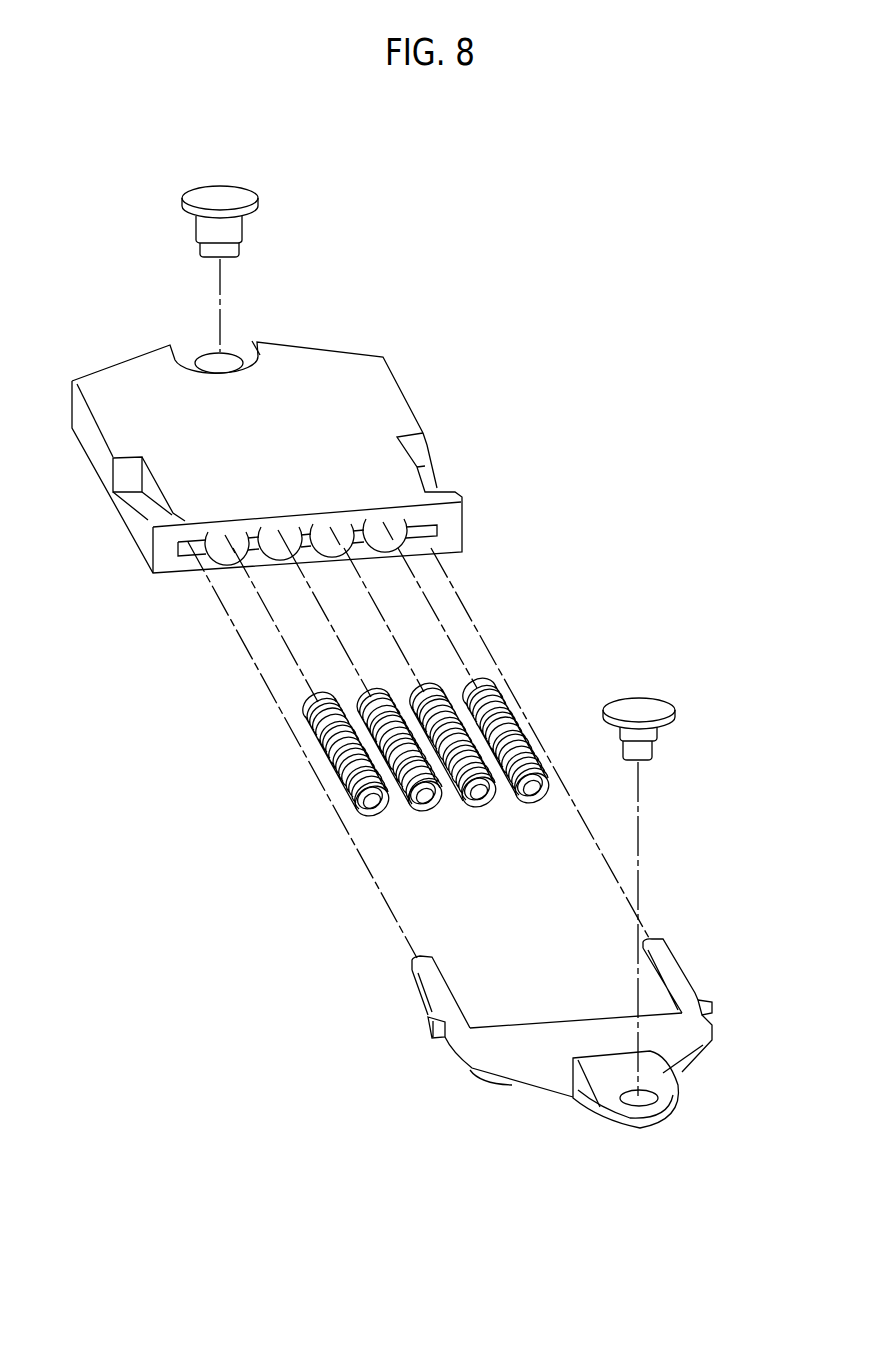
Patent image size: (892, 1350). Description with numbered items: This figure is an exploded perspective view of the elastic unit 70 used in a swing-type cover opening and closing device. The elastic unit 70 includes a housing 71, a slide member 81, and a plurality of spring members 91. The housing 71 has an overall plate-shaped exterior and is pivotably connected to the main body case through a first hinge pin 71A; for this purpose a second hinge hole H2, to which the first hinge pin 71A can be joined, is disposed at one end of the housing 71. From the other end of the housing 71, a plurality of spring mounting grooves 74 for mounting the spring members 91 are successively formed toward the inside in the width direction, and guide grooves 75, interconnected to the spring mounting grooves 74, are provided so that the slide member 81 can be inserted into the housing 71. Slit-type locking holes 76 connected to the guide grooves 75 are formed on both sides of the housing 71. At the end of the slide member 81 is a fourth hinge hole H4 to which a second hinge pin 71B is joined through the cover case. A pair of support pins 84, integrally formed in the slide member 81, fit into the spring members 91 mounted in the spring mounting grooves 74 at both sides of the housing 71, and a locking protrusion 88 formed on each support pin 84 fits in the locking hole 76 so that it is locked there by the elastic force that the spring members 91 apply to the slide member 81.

The elastic unit 70 is at (414, 139).
The housing 71 is at (420, 408).
The first hinge pin 71A is at (247, 198).
The second hinge pin 71B is at (637, 708).
The second hinge hole H2 is at (233, 357).
The spring mounting grooves 74 is at (215, 578).
The guide grooves 75 is at (367, 553).
The locking holes 76 is at (150, 500).
The spring members 91 is at (333, 757).
The slide member 81 is at (560, 1049).
The support pins 84 is at (430, 980).
The locking protrusion 88 is at (430, 1022).
The fourth hinge hole H4 is at (647, 1100).